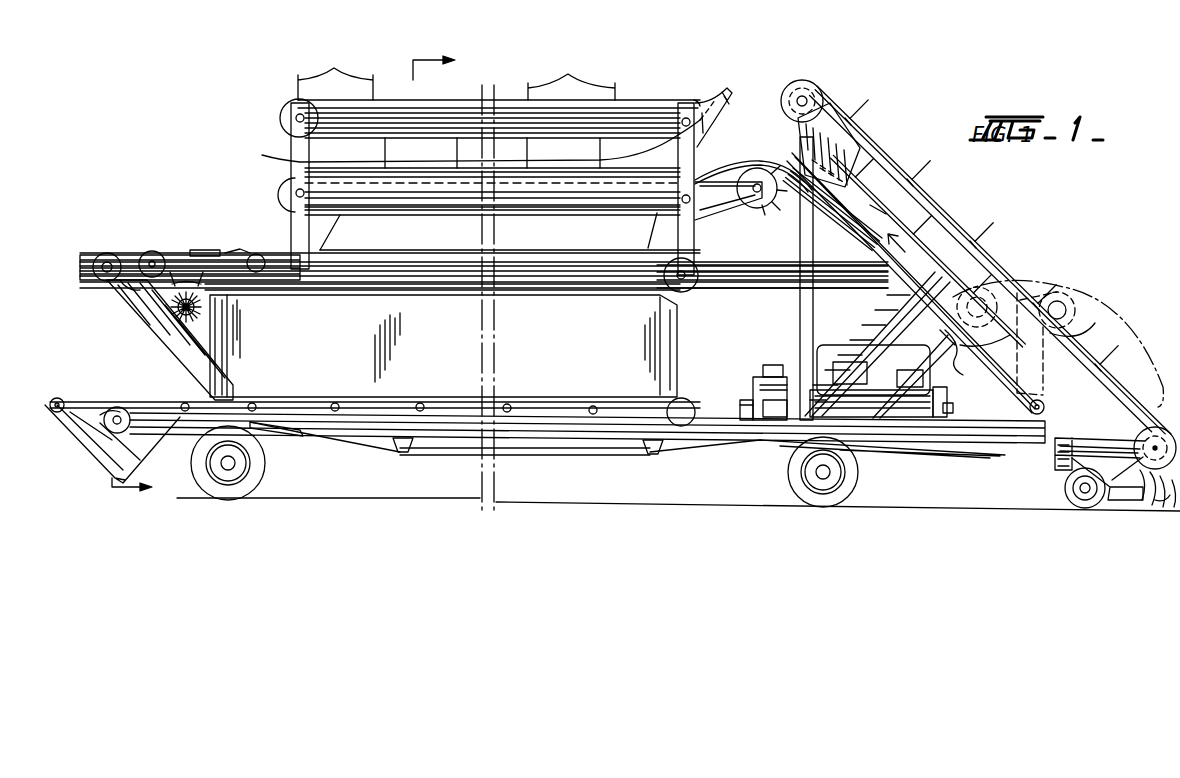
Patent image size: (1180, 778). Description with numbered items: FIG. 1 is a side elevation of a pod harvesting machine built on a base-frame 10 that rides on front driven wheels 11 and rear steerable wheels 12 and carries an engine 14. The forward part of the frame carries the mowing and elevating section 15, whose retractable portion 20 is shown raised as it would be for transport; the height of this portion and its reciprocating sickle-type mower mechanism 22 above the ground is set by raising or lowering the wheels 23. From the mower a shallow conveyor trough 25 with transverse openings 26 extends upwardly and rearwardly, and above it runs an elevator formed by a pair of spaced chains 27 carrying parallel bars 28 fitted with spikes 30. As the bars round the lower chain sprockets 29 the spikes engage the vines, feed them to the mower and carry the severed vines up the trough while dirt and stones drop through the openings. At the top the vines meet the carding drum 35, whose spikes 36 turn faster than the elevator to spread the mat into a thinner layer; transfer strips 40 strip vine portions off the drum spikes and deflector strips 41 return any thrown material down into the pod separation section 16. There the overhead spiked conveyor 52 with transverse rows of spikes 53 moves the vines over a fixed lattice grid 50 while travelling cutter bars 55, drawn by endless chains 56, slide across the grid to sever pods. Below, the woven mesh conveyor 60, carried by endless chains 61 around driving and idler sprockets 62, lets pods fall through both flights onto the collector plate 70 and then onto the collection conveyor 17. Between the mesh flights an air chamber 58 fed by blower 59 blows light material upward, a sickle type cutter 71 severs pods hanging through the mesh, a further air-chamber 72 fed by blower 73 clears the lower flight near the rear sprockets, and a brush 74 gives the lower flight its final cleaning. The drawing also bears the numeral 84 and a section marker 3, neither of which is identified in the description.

The base-frame 10 is at (588, 296).
The front driven wheels 11 is at (790, 476).
The rear steerable wheels 12 is at (266, 465).
The engine 14 is at (854, 348).
The mowing and elevating section 15 is at (978, 175).
The pod separation section 16 is at (280, 132).
The collection conveyor 17 is at (92, 404).
The retractable portion 20 is at (1053, 456).
The mower mechanism 22 is at (1128, 500).
The wheels 23 is at (1072, 302).
The conveyor trough 25 is at (1010, 383).
The transverse openings 26 is at (966, 362).
The spaced chains 27 is at (905, 165).
The parallel bars 28 is at (925, 185).
The lower chain sprockets 29 is at (1143, 435).
The spikes 30 is at (1155, 395).
The carding drum 35 is at (758, 207).
The spikes 36 is at (771, 209).
The transfer strips 40 is at (757, 165).
The deflector strips 41 is at (528, 168).
The lattice grid 50 is at (422, 200).
The overhead spiked conveyor 52 is at (643, 100).
The transverse rows of spikes 53 is at (456, 73).
The travelling cutter bars 55 is at (630, 216).
The endless chains 56 is at (470, 215).
The air chamber 58 is at (222, 252).
The blower 59 is at (255, 252).
The woven mesh conveyor 60 is at (566, 262).
The endless chains 61 is at (472, 298).
The driving and idler sprockets 62 is at (100, 254).
The collector plate 70 is at (358, 356).
The sickle type cutter 71 is at (200, 245).
The further air-chamber 72 is at (128, 255).
The blower 73 is at (120, 300).
The brush 74 is at (200, 312).
The support strut 84 is at (112, 408).
The section line 3 is at (291, 269).